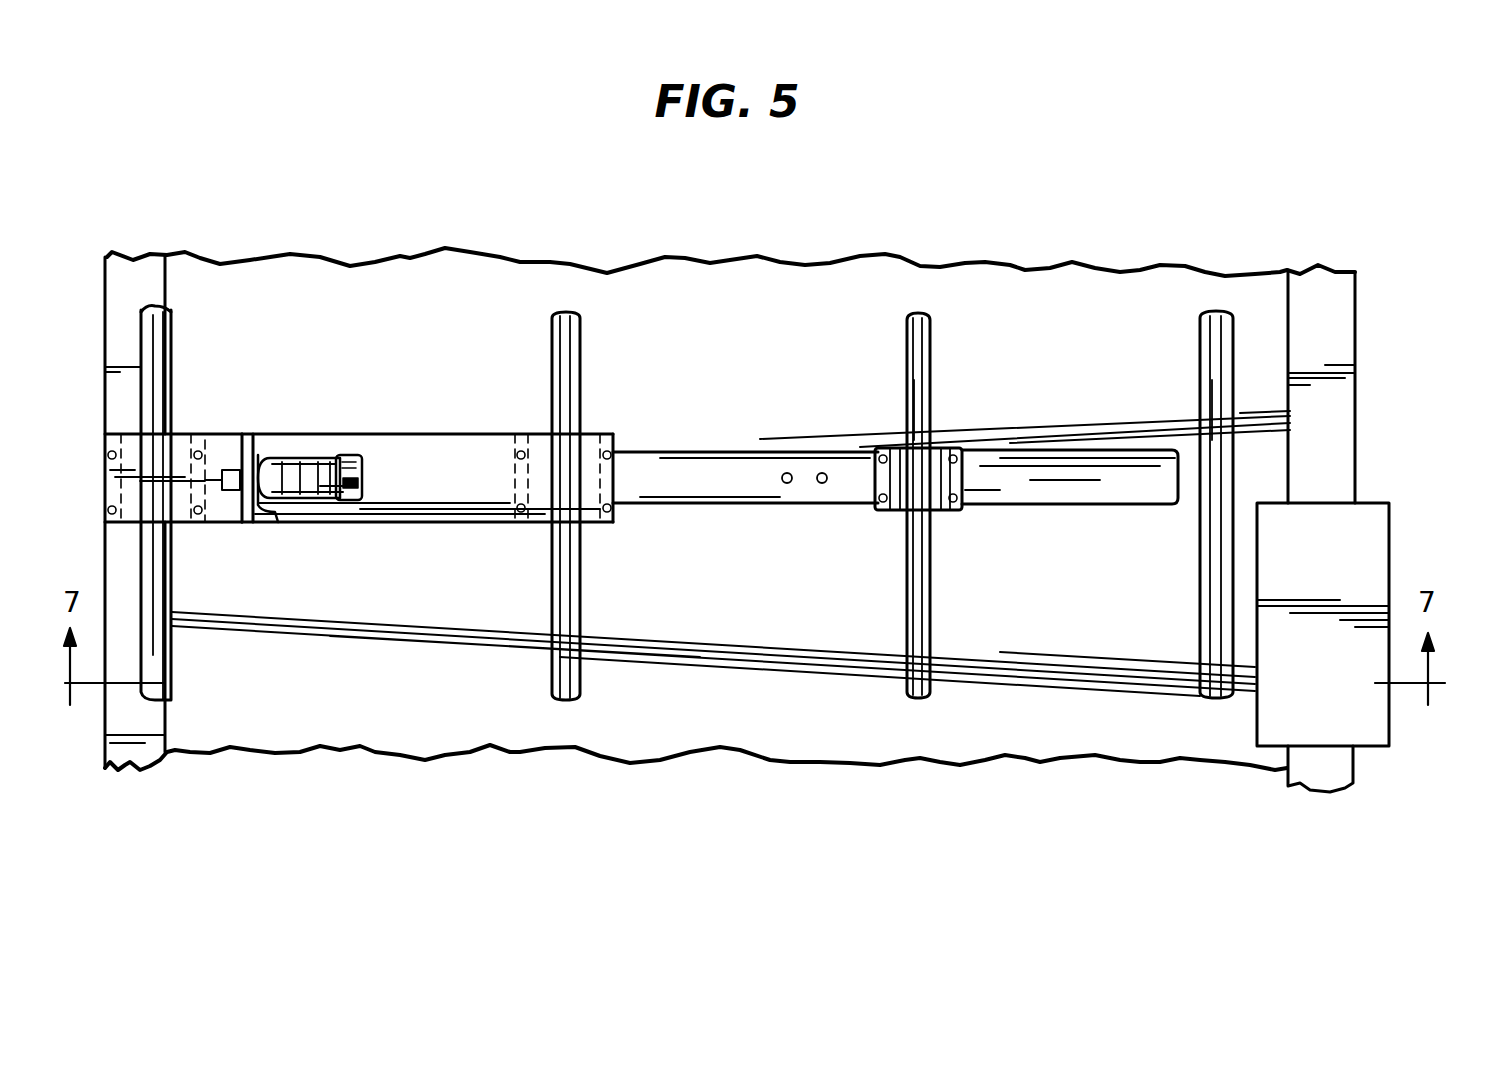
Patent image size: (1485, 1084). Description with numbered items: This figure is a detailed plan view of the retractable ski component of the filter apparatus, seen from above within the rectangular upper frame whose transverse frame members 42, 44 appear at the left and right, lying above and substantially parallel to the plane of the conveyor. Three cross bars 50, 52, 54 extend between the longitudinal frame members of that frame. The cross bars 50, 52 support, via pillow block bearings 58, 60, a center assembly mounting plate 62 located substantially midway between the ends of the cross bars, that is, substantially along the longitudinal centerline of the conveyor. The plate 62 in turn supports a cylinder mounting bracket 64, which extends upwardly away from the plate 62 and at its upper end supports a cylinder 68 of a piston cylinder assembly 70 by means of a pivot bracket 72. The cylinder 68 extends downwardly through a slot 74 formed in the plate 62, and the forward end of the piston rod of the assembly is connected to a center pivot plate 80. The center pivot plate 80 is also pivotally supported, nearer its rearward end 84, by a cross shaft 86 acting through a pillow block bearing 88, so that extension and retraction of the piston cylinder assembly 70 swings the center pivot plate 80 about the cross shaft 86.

The transverse frame member 42 is at (118, 556).
The transverse frame member 44 is at (1322, 420).
The cross bar 50 is at (160, 579).
The cross bar 52 is at (578, 600).
The cross bar 54 is at (1202, 576).
The pillow block bearing 58 is at (178, 446).
The pillow block bearing 60 is at (600, 434).
The center assembly mounting plate 62 is at (445, 447).
The cylinder mounting bracket 64 is at (262, 510).
The cylinder 68 is at (344, 462).
The piston cylinder assembly 70 is at (362, 489).
The pivot bracket 72 is at (282, 456).
The slot 74 is at (340, 486).
The center pivot plate 80 is at (708, 462).
The rearward end 84 is at (1082, 488).
The cross shaft 86 is at (920, 590).
The pillow block bearing 88 is at (873, 474).